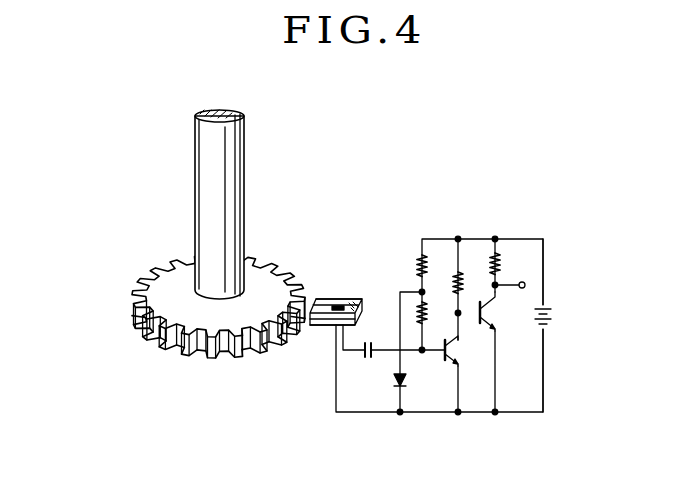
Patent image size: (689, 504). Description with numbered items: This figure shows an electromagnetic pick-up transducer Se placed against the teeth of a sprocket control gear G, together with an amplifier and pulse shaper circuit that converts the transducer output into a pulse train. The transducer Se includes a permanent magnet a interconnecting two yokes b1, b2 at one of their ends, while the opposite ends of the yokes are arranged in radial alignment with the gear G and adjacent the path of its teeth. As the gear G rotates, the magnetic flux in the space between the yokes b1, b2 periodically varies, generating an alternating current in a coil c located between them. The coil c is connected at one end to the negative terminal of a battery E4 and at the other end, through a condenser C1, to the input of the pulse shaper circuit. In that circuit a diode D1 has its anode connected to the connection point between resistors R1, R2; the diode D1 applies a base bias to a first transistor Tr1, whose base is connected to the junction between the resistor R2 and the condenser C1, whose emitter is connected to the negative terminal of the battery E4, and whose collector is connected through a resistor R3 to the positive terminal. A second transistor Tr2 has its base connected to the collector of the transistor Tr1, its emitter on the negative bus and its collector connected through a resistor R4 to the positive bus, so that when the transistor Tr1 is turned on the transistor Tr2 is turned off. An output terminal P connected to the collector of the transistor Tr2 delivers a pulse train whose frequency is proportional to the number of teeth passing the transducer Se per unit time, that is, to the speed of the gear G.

The gear G is at (297, 285).
The transducer Se is at (361, 299).
The permanent magnet a is at (357, 309).
The coil c is at (325, 319).
The yoke b1 is at (335, 299).
The yoke b2 is at (331, 326).
The condenser C1 is at (372, 364).
The diode D1 is at (409, 382).
The resistor R1 is at (432, 269).
The resistor R2 is at (432, 315).
The resistor R3 is at (468, 285).
The resistor R4 is at (505, 267).
The first transistor Tr1 is at (467, 351).
The second transistor Tr2 is at (503, 311).
The output terminal P is at (529, 285).
The battery E4 is at (556, 325).